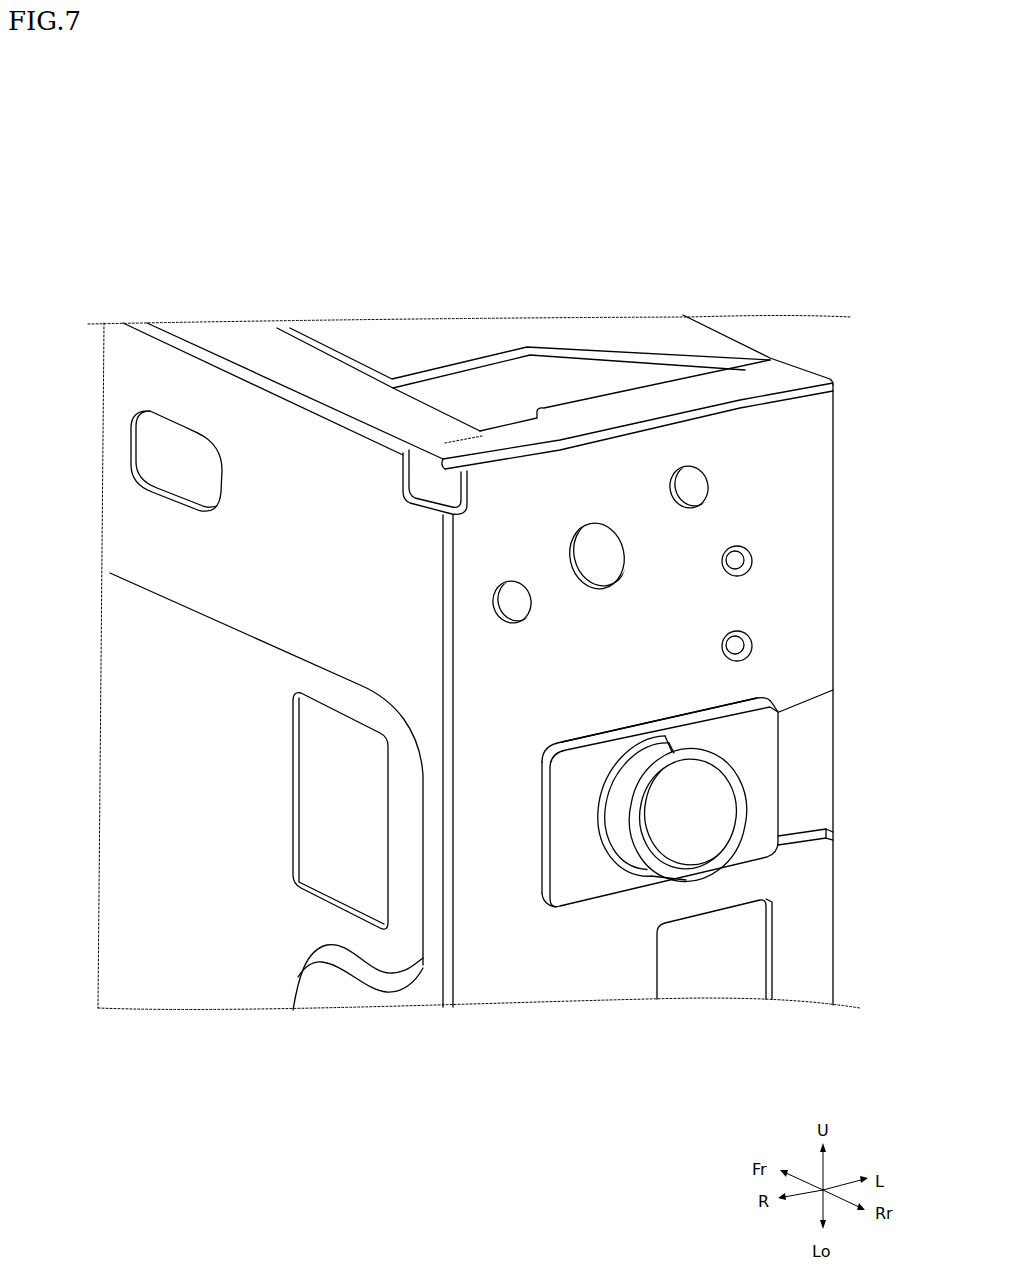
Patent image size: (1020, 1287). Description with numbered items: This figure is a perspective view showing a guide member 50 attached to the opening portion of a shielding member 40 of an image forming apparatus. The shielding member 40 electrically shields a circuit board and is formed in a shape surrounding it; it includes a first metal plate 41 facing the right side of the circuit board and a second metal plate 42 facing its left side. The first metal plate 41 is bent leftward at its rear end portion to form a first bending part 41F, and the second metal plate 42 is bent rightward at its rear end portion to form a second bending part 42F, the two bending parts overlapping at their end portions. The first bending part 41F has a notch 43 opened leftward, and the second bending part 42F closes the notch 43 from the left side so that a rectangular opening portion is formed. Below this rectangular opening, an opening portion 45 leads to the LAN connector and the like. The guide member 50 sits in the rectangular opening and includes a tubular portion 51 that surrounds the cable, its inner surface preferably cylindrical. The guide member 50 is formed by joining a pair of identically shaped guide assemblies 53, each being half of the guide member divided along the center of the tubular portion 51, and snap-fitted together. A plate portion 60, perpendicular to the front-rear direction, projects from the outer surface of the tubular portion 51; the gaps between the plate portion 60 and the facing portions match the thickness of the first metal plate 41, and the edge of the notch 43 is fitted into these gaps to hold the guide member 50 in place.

The shielding member 40 is at (506, 663).
The first metal plate 41 is at (848, 467).
The second metal plate 42 is at (778, 343).
The second bending part 42F is at (810, 740).
The first bending part 41F is at (812, 876).
The notch 43 is at (800, 831).
The opening portion 45 is at (764, 962).
The guide member 50 is at (684, 650).
The tubular portion 51 is at (668, 883).
The guide assembly 53 is at (617, 713).
The plate portion 60 is at (558, 733).